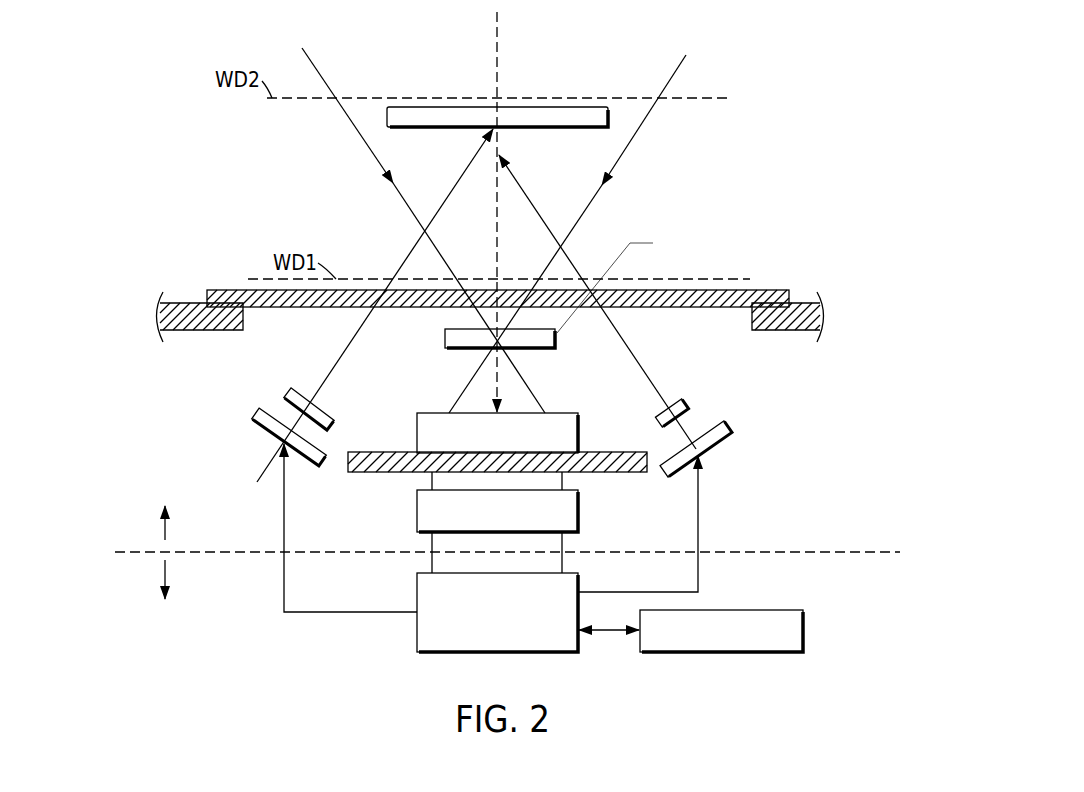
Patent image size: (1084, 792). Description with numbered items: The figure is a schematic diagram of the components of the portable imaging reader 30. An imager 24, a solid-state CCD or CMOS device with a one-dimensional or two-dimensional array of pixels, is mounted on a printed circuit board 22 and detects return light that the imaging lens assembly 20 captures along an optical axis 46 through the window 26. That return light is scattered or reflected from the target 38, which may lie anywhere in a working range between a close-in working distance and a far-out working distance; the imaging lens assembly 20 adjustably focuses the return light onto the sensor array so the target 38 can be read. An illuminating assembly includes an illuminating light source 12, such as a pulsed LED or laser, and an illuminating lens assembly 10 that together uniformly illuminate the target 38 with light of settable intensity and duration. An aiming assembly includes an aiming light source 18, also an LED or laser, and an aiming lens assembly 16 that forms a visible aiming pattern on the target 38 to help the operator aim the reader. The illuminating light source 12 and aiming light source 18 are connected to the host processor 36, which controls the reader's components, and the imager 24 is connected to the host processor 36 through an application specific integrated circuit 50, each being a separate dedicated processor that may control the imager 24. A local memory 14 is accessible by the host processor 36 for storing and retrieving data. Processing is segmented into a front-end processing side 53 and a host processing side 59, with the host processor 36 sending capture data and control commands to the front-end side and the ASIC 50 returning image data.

The illuminating lens assembly 10 is at (690, 403).
The illuminating light source 12 is at (717, 448).
The local memory 14 is at (803, 632).
The aiming lens assembly 16 is at (285, 393).
The aiming light source 18 is at (263, 434).
The imaging lens assembly 20 is at (445, 337).
The printed circuit board 22 is at (612, 472).
The imager 24 is at (417, 432).
The window 26 is at (232, 290).
The imaging reader 30 is at (680, 168).
The host processor 36 is at (417, 592).
The target 38 is at (424, 128).
The optical axis 46 is at (497, 78).
The application specific integrated circuit 50 is at (417, 511).
The front-end processing side 53 is at (163, 530).
The host processing side 59 is at (163, 573).